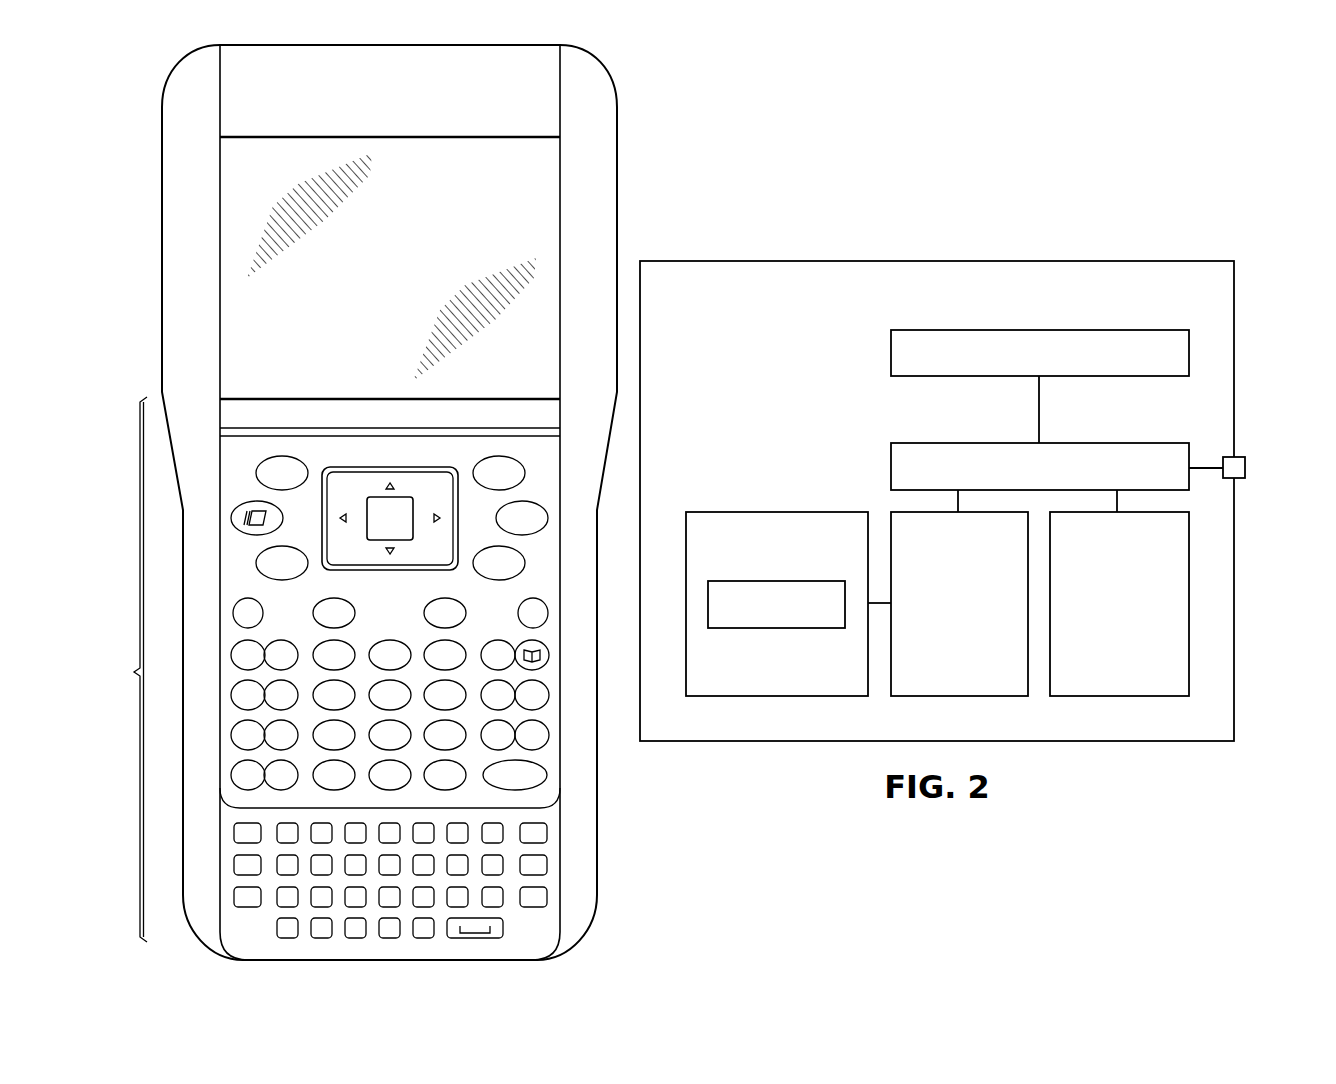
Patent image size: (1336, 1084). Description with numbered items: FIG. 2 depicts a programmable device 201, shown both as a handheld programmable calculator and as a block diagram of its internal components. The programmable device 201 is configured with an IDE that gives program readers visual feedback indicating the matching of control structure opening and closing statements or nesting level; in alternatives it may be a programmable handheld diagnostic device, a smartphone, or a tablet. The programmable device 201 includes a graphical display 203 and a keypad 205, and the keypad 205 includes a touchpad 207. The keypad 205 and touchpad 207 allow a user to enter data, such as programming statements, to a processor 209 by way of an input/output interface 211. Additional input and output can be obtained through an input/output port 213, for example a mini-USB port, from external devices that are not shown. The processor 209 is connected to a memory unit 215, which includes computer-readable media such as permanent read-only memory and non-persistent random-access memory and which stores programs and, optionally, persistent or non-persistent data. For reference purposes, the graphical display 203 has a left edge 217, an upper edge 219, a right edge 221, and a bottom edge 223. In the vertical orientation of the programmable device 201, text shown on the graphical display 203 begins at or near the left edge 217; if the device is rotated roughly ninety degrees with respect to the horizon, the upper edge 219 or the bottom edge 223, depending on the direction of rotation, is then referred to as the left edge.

The programmable device 201 is at (156, 178).
The graphical display 203 is at (369, 278).
The keypad 205 is at (778, 511).
The touchpad 207 is at (387, 571).
The processor 209 is at (1074, 442).
The input/output interface 211 is at (937, 650).
The input/output port 213 is at (1247, 461).
The memory unit 215 is at (1096, 650).
The left edge 217 is at (217, 268).
The upper edge 219 is at (390, 135).
The right edge 221 is at (561, 240).
The bottom edge 223 is at (315, 399).